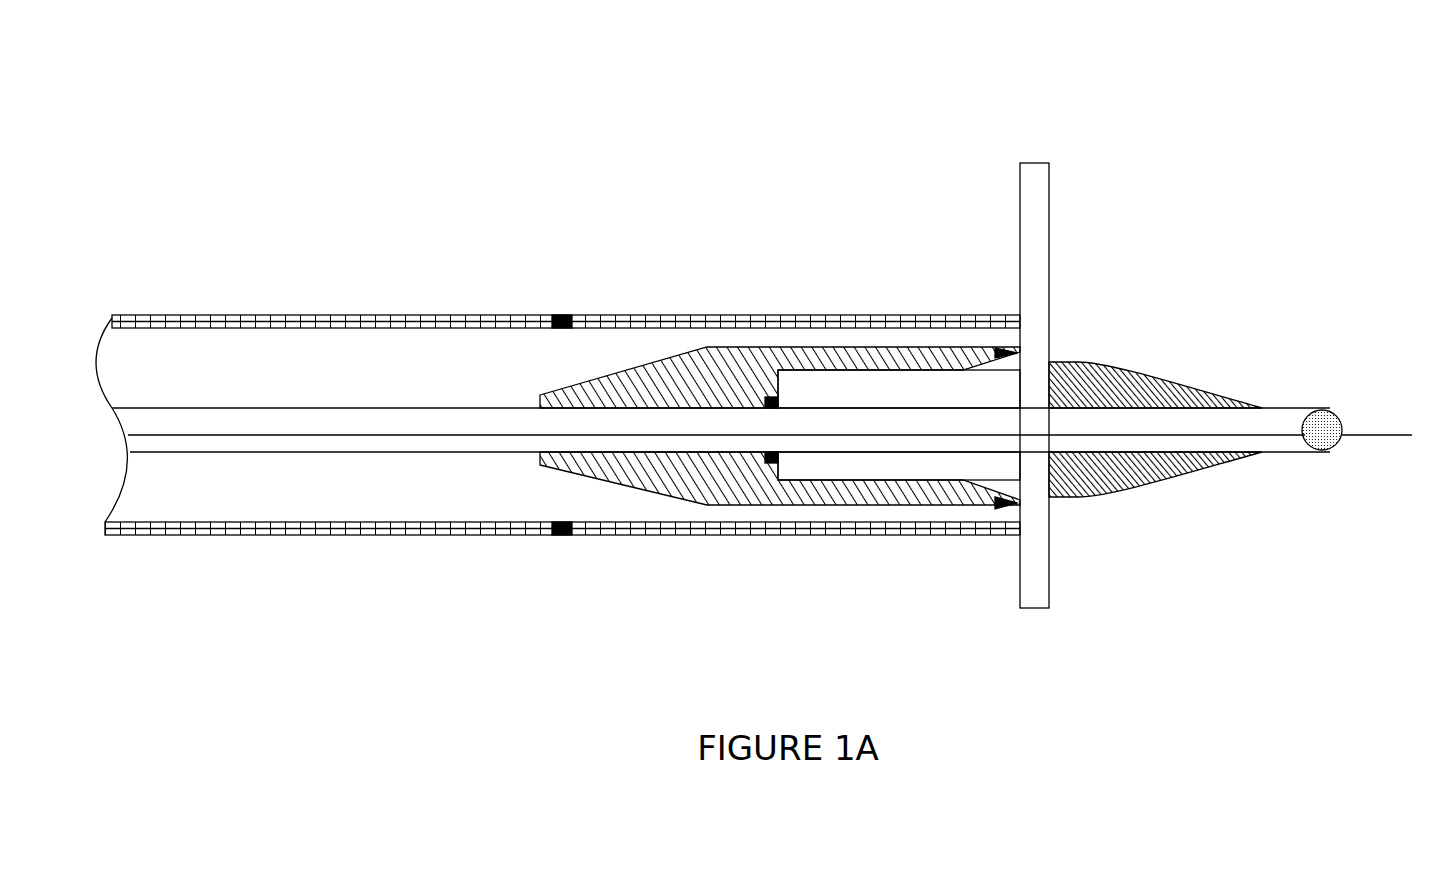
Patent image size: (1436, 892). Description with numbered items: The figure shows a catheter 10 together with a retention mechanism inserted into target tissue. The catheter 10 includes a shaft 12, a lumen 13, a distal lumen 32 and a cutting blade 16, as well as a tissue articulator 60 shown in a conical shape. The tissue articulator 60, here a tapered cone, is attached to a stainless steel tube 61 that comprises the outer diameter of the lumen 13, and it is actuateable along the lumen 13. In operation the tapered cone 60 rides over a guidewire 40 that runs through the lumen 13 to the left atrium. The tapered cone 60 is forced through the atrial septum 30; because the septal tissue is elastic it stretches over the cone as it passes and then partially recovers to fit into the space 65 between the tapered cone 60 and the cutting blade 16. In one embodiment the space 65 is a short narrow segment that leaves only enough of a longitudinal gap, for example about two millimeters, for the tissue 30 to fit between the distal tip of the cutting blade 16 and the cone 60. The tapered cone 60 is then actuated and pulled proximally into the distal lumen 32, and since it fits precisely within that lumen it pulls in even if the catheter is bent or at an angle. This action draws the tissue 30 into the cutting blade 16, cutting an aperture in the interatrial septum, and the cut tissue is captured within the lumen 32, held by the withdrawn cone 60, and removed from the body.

The catheter 10 is at (360, 352).
The shaft 12 is at (283, 455).
The lumen 13 is at (322, 445).
The cutting blade 16 is at (723, 380).
The distal lumen 32 is at (876, 370).
The septum 30 is at (1032, 182).
The tissue articulator 60 is at (1085, 387).
The stainless steel tube 61 is at (1292, 408).
The guidewire 40 is at (1370, 442).
The space 65 is at (1022, 402).